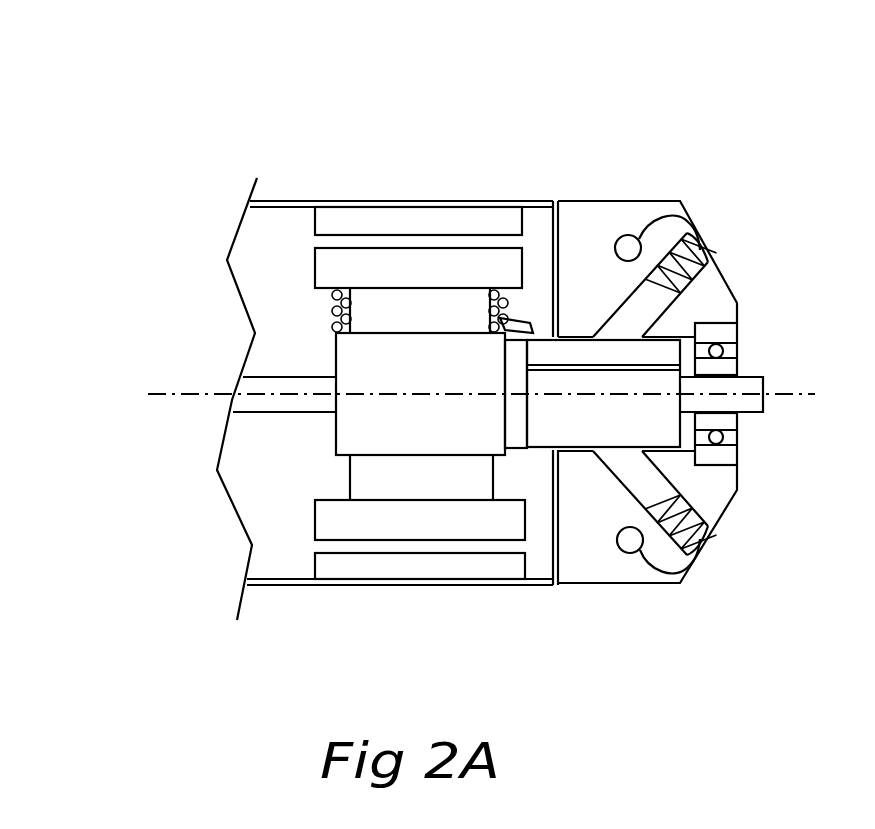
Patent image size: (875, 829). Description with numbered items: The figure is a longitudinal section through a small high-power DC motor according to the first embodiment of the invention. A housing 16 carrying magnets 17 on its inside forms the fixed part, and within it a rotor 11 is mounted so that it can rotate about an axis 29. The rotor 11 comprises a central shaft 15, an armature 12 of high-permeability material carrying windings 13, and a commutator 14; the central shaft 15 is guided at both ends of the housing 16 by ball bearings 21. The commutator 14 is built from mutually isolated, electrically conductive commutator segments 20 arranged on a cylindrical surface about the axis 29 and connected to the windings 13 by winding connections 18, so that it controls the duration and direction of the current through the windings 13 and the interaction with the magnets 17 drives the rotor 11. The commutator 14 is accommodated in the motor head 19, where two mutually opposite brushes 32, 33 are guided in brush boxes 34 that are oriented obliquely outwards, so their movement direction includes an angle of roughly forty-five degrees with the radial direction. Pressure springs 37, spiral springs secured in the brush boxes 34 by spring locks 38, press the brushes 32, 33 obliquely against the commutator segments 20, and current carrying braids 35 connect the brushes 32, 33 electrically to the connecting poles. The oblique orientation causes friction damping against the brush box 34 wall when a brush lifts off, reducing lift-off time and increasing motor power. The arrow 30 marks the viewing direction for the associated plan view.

The rotor 11 is at (353, 435).
The armature 12 is at (350, 268).
The windings 13 is at (335, 317).
The commutator 14 is at (605, 423).
The central shaft 15 is at (748, 402).
The housing 16 is at (403, 203).
The magnets 17 is at (377, 567).
The winding connections 18 is at (505, 320).
The motor head 19 is at (653, 203).
The commutator segments 20 is at (542, 440).
The ball bearings 21 is at (723, 352).
The axis 29 is at (212, 393).
The direction arrow 30 is at (452, 150).
The brush 32 is at (630, 315).
The brush 33 is at (630, 467).
The brush boxes 34 is at (663, 547).
The current carrying braids 35 is at (690, 215).
The pressure springs 37 is at (713, 540).
The spring locks 38 is at (713, 530).